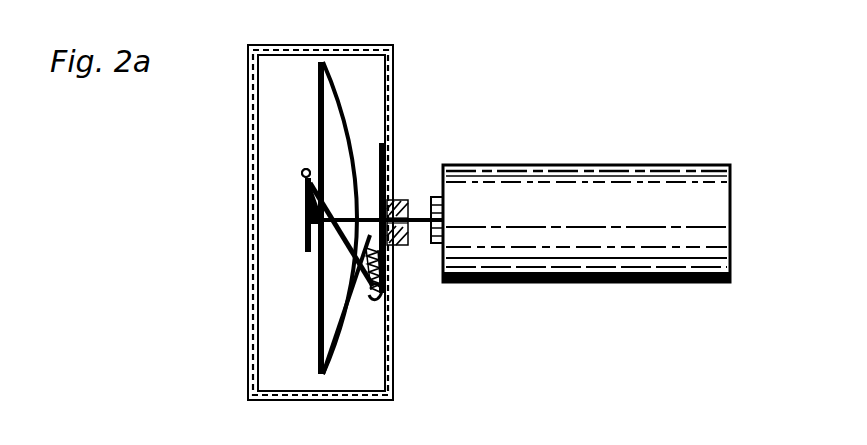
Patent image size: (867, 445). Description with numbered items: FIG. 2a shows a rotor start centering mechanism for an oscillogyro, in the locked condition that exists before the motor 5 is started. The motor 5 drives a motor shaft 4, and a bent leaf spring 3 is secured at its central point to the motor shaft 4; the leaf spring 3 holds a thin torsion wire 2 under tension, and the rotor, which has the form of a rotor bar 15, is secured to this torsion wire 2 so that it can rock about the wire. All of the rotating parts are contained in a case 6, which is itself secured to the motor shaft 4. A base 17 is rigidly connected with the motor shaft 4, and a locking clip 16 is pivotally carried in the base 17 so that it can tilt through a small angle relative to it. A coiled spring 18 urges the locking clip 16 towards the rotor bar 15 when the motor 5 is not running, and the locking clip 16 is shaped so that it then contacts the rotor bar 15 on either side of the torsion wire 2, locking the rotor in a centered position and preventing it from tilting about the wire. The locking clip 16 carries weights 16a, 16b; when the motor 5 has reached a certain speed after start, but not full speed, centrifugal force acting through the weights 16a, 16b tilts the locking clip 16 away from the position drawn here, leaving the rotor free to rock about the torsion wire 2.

The torsion wire 2 is at (318, 110).
The leaf spring 3 is at (341, 106).
The motor shaft 4 is at (417, 209).
The motor 5 is at (678, 195).
The case 6 is at (393, 355).
The rotor bar 15 is at (305, 235).
The locking clip 16 is at (378, 292).
The weight 16a is at (307, 168).
The weight 16b is at (306, 173).
The base 17 is at (389, 147).
The coiled spring 18 is at (389, 272).